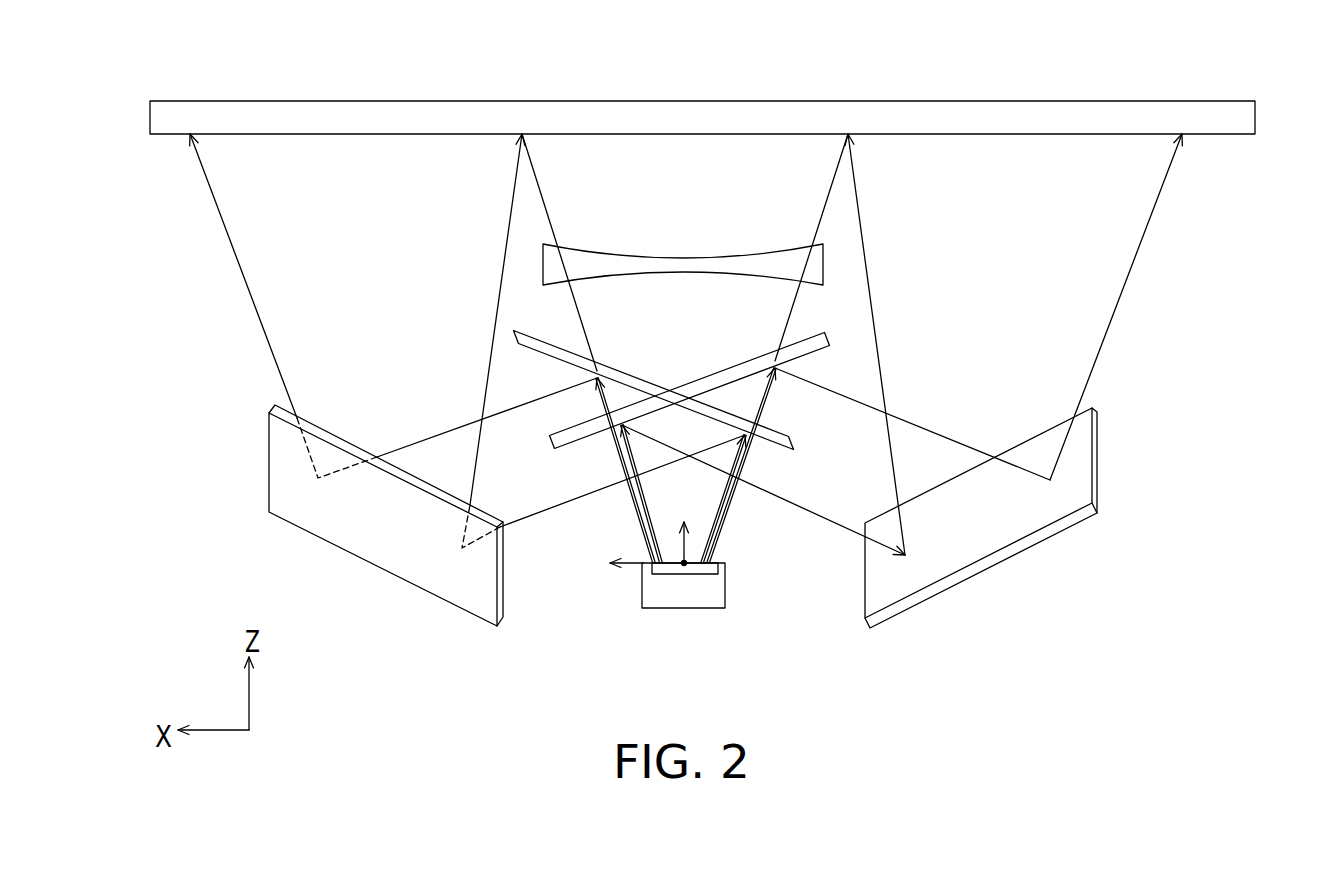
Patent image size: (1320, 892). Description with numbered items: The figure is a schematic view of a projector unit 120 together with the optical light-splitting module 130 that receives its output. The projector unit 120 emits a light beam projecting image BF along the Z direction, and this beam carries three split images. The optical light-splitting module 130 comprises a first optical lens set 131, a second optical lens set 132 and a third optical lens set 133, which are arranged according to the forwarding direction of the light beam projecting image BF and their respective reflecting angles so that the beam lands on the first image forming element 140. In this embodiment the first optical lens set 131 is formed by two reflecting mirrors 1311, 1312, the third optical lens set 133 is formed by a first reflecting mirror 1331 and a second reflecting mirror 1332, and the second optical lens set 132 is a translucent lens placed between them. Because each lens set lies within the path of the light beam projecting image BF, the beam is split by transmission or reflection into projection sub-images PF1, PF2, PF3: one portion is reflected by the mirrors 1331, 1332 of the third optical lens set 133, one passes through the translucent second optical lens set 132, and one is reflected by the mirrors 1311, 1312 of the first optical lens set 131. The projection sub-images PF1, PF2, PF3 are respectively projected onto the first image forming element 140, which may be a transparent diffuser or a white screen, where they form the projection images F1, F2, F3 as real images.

The light source 120 is at (685, 598).
The optical light-splitting module 130 is at (1150, 348).
The first optical lens set 131 is at (1033, 277).
The reflecting mirror 1311 is at (830, 340).
The reflecting mirror 1312 is at (1055, 440).
The second optical lens set 132 is at (677, 264).
The third optical lens set 133 is at (420, 295).
The first reflecting mirror 1331 is at (521, 339).
The second reflecting mirror 1332 is at (343, 440).
The first image forming element 140 is at (817, 118).
The projection image F1 is at (410, 136).
The projection image F2 is at (670, 136).
The projection image F3 is at (1038, 136).
The projection sub-image PF1 is at (253, 213).
The projection sub-image PF2 is at (582, 178).
The projection sub-image PF3 is at (1097, 182).
The light beam projecting image BF is at (708, 507).